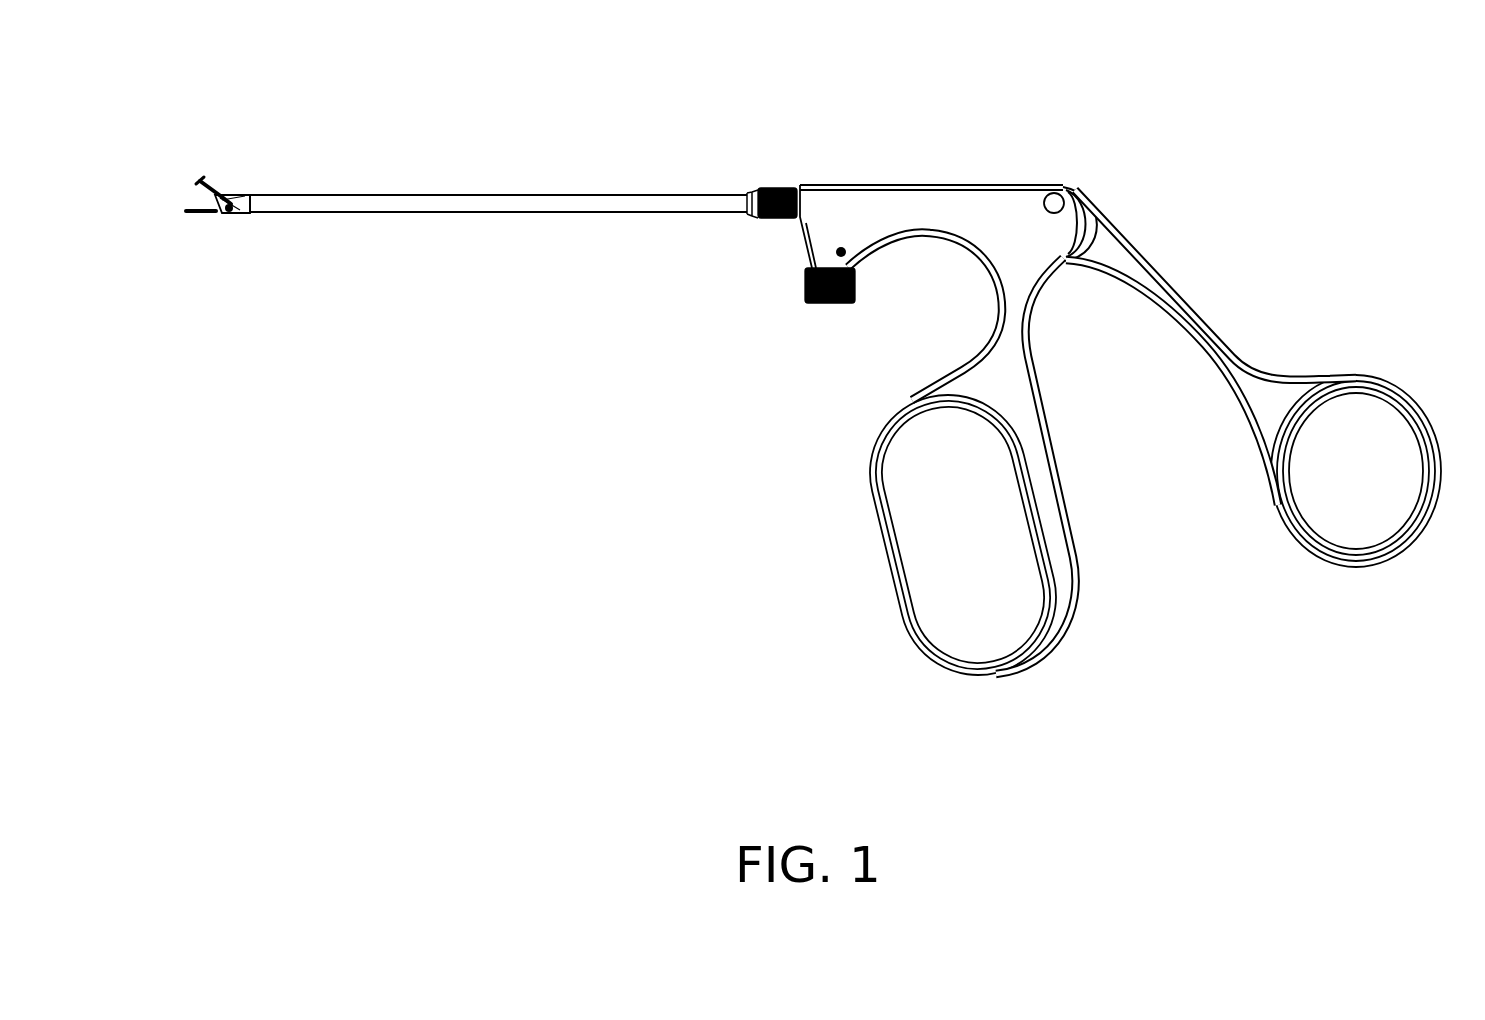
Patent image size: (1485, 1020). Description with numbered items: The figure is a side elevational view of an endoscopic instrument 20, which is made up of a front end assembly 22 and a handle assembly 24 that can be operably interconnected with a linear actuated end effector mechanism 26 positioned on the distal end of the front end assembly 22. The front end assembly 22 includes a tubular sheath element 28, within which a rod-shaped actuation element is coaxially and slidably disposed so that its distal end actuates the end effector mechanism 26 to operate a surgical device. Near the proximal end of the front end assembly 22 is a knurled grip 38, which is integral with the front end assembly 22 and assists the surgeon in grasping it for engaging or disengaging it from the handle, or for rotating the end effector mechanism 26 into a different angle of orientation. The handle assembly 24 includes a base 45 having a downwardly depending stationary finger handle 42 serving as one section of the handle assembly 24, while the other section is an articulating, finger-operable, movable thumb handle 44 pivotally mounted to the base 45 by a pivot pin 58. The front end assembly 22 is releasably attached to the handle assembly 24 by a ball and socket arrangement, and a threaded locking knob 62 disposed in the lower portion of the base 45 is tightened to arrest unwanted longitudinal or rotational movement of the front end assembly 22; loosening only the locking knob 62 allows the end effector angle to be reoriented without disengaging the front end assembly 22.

The endoscopic instrument 20 is at (1273, 128).
The front end assembly 22 is at (495, 222).
The handle assembly 24 is at (843, 502).
The end effector mechanism 26 is at (240, 195).
The tubular sheath element 28 is at (383, 215).
The knurled grip 38 is at (763, 218).
The stationary finger handle 42 is at (1060, 480).
The movable thumb handle 44 is at (1273, 495).
The base 45 is at (900, 183).
The pivot pin 58 is at (1055, 195).
The threaded locking knob 62 is at (823, 304).